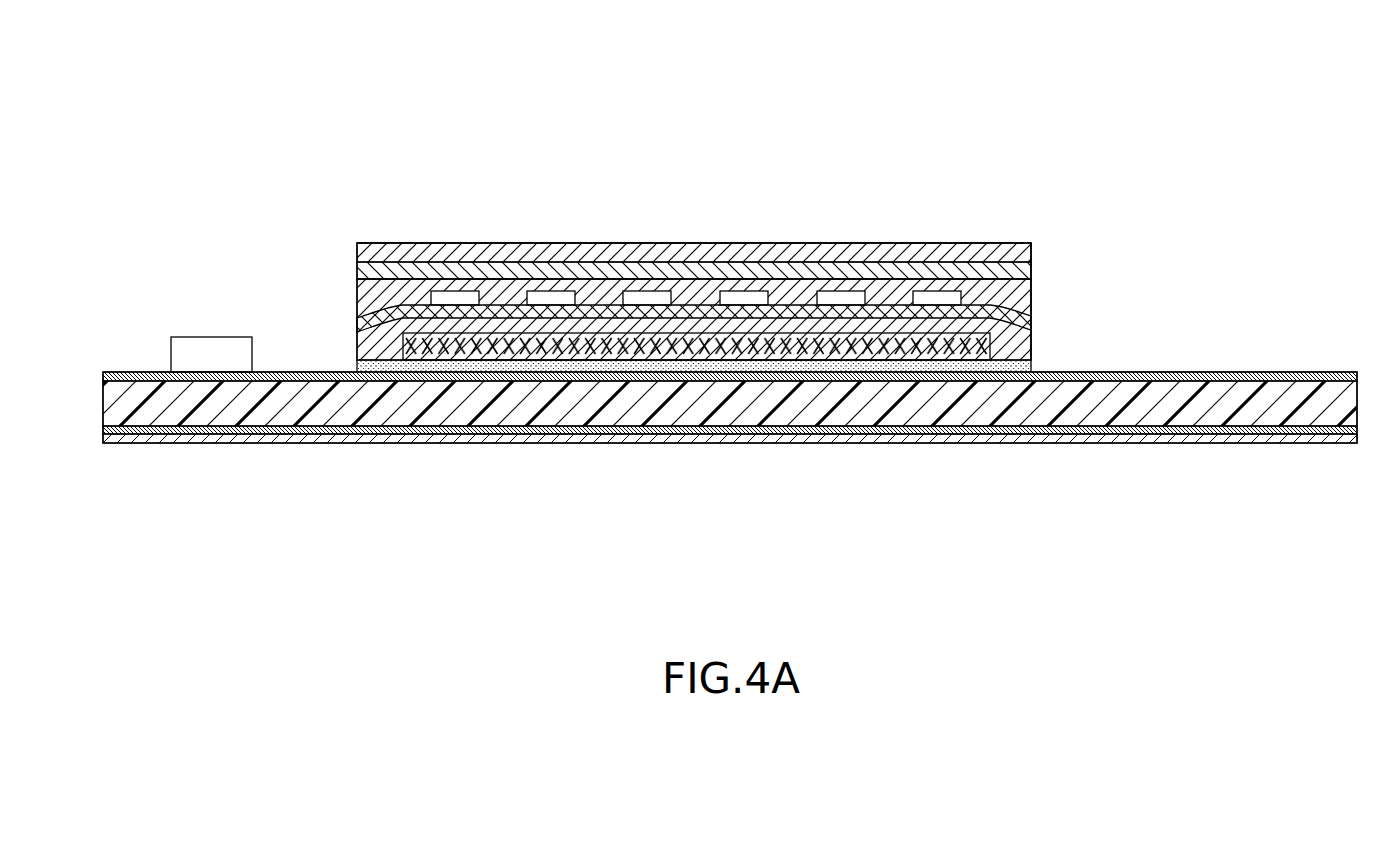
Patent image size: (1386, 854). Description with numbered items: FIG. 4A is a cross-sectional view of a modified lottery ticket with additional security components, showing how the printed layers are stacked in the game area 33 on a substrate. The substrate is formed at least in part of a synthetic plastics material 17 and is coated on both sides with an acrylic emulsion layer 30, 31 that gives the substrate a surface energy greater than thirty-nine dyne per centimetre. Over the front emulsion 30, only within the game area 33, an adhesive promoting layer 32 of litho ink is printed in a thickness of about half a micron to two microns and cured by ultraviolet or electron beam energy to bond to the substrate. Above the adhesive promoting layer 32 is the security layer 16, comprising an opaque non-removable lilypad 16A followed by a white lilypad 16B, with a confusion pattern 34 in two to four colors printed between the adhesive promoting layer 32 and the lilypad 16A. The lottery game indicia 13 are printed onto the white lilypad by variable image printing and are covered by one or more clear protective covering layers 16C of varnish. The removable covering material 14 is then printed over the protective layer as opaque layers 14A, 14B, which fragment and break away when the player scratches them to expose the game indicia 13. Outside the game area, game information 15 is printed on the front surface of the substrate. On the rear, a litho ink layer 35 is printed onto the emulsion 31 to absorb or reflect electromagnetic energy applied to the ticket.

The lottery game indicia 13 is at (937, 243).
The removable covering material 14 is at (729, 236).
The opaque material layer 14A is at (1035, 253).
The opaque material layer 14B is at (1033, 271).
The game information 15 is at (191, 353).
The security layer 16 is at (1058, 331).
The opaque non-removable lilypad 16A is at (372, 345).
The white lilypad 16B is at (372, 300).
The clear protective covering layer 16C is at (690, 292).
The synthetic plastics material 17 is at (1333, 403).
The acrylic emulsion layer 30 is at (1188, 378).
The acrylic emulsion layer 31 is at (1122, 376).
The adhesive promoting layer 32 is at (375, 365).
The game area 33 is at (1028, 152).
The confusion pattern 34 is at (476, 347).
The litho ink layer 35 is at (875, 441).